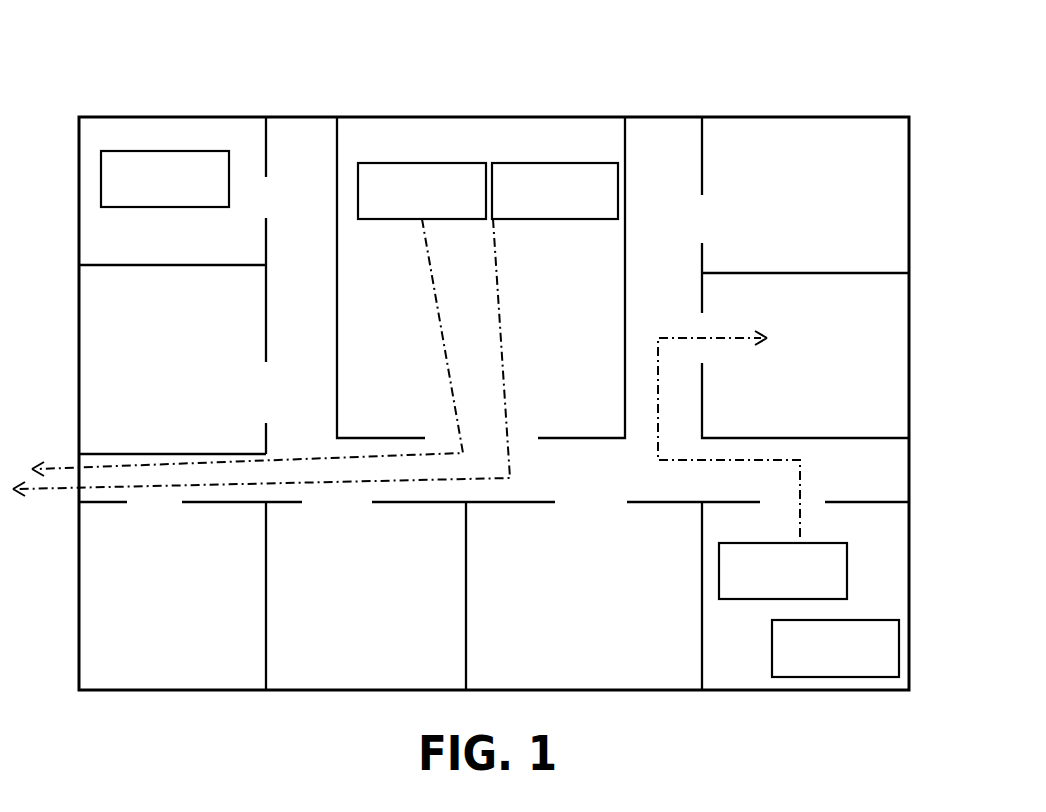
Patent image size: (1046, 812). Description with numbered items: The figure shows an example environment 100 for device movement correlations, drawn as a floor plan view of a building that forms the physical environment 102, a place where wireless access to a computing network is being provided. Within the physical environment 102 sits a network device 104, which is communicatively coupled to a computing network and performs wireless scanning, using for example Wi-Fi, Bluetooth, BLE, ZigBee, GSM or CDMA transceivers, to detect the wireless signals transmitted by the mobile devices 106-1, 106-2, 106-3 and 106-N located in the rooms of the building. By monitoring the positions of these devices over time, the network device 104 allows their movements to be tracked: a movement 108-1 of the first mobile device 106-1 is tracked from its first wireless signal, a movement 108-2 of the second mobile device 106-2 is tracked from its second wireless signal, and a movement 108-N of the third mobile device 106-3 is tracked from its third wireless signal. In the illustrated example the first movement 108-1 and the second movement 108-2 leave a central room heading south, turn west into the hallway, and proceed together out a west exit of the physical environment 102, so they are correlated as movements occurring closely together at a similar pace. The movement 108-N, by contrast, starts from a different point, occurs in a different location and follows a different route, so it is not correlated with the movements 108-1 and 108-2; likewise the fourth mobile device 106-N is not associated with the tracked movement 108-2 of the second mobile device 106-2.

The environment 100 is at (132, 58).
The physical environment 102 is at (798, 117).
The network device 104 is at (193, 151).
The first mobile device 106-1 is at (428, 163).
The second mobile device 106-2 is at (552, 163).
The third mobile device 106-3 is at (828, 543).
The fourth mobile device 106-N is at (862, 677).
The movement of first mobile device 108-1 is at (440, 325).
The movement of second mobile device 108-2 is at (503, 300).
The movement of third mobile device 108-N is at (728, 341).